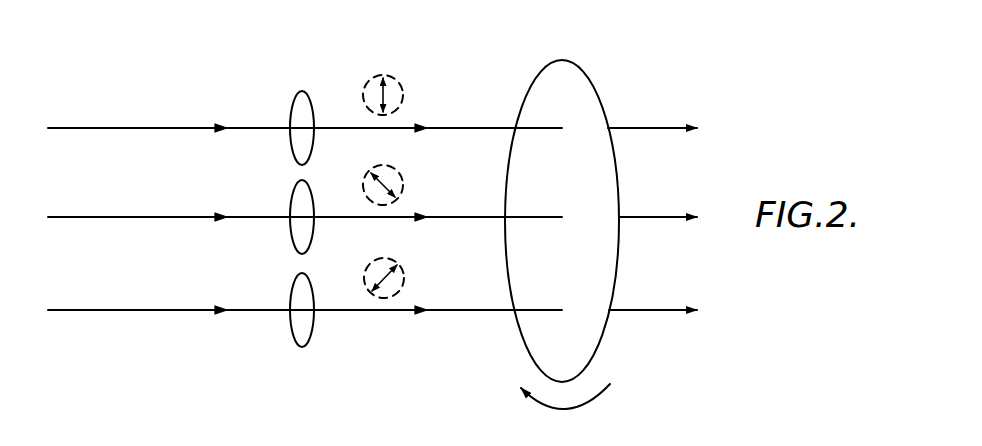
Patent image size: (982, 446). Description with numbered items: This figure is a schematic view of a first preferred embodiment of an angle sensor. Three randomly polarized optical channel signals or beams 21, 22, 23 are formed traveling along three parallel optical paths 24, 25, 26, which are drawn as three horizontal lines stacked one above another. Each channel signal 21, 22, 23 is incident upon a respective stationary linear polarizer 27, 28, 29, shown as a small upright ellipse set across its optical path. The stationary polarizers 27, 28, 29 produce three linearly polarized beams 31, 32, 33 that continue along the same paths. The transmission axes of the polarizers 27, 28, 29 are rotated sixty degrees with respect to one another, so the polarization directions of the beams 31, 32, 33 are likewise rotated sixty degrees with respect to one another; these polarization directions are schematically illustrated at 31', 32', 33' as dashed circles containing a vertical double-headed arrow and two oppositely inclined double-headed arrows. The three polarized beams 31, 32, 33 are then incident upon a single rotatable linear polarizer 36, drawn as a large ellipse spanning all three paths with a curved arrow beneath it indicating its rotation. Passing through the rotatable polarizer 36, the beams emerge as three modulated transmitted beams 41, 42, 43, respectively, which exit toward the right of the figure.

The optical channel signal 21 is at (200, 129).
The optical channel signal 22 is at (200, 218).
The optical channel signal 23 is at (200, 311).
The optical path 24 is at (103, 127).
The optical path 25 is at (103, 216).
The optical path 26 is at (103, 309).
The stationary linear polarizer 27 is at (292, 107).
The stationary linear polarizer 28 is at (292, 197).
The stationary linear polarizer 29 is at (292, 290).
The linearly polarized beam 31 is at (438, 147).
The linearly polarized beam 32 is at (438, 236).
The linearly polarized beam 33 is at (438, 329).
The polarization direction 31' is at (364, 85).
The polarization direction 32' is at (364, 175).
The polarization direction 33' is at (365, 268).
The rotatable linear polarizer 36 is at (562, 60).
The modulated transmitted beam 41 is at (681, 127).
The modulated transmitted beam 42 is at (681, 216).
The modulated transmitted beam 43 is at (681, 309).